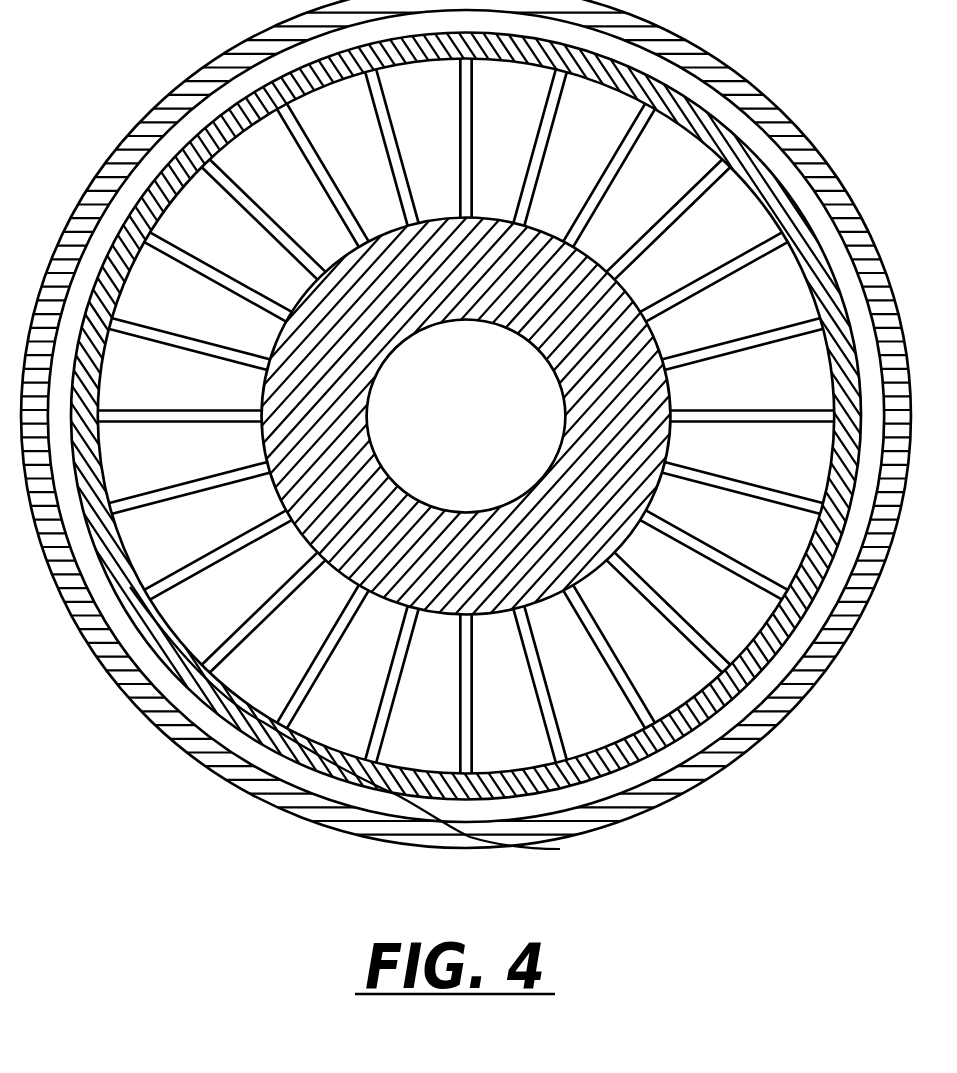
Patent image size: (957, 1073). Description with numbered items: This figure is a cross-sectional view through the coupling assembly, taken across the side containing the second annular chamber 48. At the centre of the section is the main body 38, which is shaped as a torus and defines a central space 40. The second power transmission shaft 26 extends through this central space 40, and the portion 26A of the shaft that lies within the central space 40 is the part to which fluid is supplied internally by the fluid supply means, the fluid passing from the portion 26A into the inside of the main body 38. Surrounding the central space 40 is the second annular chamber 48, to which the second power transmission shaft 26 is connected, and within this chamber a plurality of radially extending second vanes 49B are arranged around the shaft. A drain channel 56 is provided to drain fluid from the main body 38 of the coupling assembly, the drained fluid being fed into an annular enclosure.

The second power transmission shaft 26 is at (272, 494).
The portion of the second power transmission shaft 26A is at (553, 485).
The central space 40 is at (491, 393).
The main body 38 is at (153, 665).
The second annular chamber 48 is at (597, 786).
The second vanes 49B is at (312, 690).
The drain channel 56 is at (392, 803).